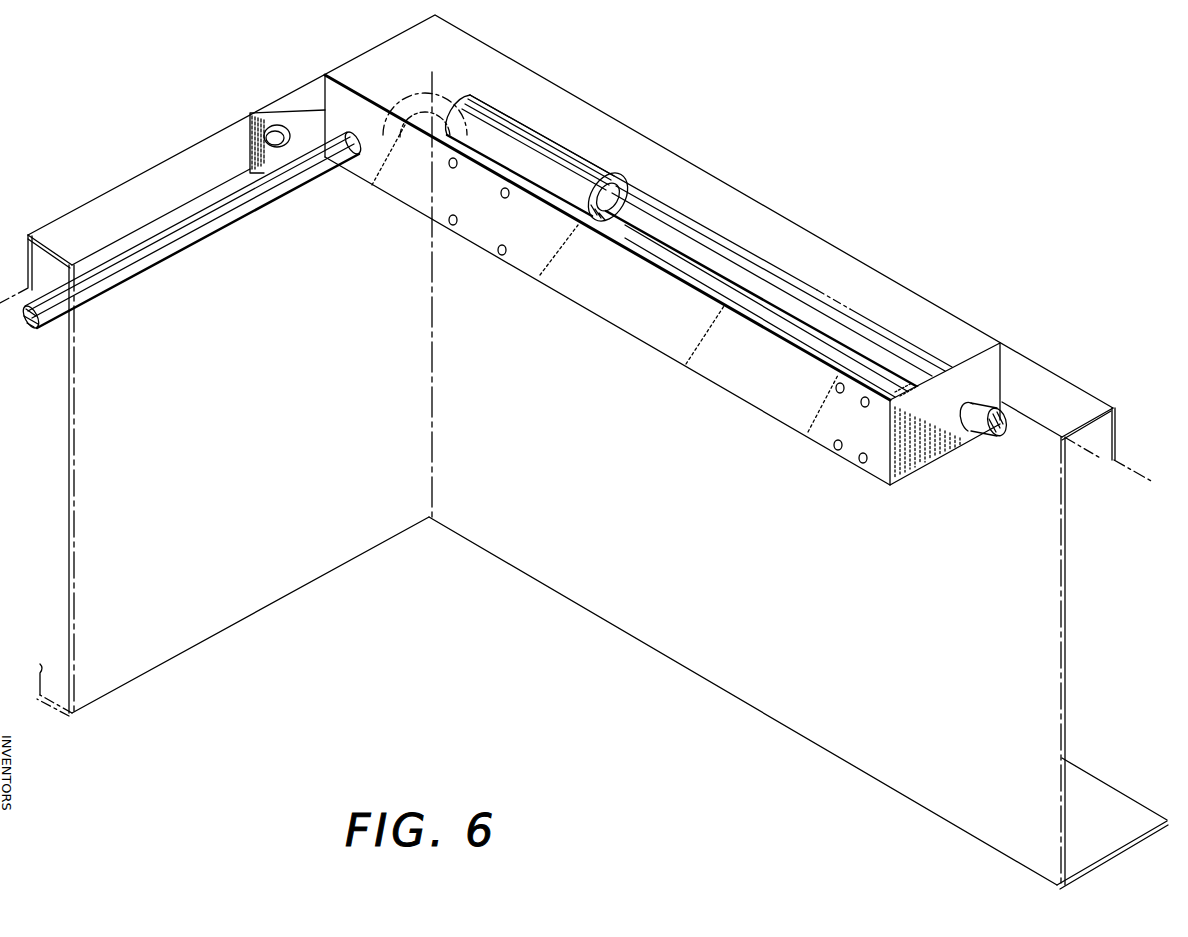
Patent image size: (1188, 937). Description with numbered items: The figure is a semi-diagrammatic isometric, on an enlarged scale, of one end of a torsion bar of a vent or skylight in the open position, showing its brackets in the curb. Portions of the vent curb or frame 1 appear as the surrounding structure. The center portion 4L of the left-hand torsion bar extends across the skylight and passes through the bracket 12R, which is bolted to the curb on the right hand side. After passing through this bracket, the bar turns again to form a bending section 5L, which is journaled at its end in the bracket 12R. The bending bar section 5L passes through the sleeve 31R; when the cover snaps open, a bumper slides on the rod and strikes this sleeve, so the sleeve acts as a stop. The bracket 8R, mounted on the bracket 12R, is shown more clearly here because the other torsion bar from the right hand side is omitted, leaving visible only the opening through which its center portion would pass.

The vent curb 1 is at (856, 621).
The bracket 12R is at (610, 303).
The bracket 8R is at (262, 120).
The center portion of torsion bar 4L is at (272, 183).
The sleeve 31R is at (538, 142).
The bending section of torsion bar 5L is at (702, 255).